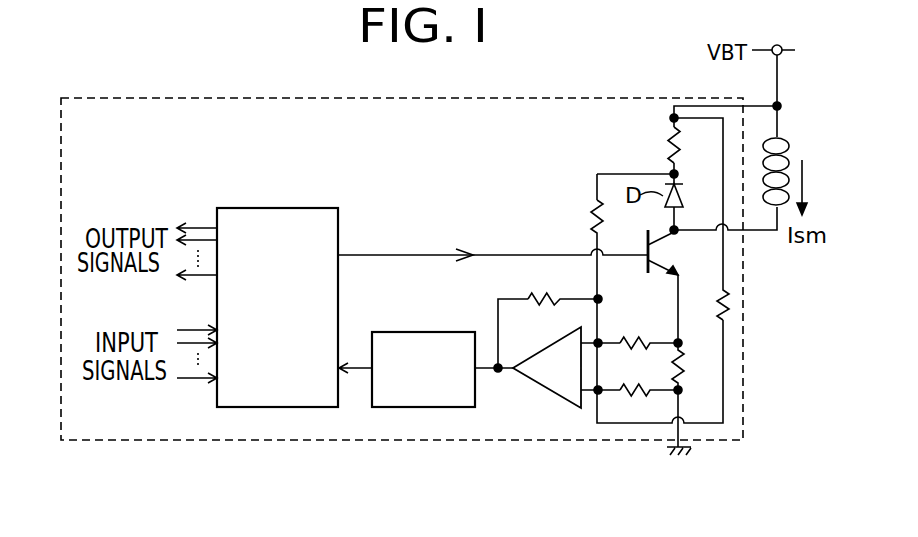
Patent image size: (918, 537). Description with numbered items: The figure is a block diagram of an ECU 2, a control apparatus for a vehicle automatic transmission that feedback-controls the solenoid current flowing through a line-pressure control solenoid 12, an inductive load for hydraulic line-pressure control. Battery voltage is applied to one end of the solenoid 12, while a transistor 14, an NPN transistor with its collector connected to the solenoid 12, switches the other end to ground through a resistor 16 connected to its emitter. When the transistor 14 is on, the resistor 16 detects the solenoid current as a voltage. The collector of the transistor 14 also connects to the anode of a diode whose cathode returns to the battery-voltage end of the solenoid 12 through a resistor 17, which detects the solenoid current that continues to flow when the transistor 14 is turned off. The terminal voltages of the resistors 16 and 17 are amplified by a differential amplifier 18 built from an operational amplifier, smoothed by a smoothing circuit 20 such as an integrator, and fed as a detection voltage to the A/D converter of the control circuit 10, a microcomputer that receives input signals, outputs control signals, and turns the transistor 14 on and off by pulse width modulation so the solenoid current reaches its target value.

The ECU 2 is at (120, 98).
The control circuit 10 is at (318, 208).
The line-pressure control solenoid 12 is at (793, 150).
The transistor 14 is at (666, 253).
The resistor 16 is at (688, 353).
The resistor 17 is at (660, 145).
The differential amplifier 18 is at (545, 377).
The smoothing circuit 20 is at (430, 332).